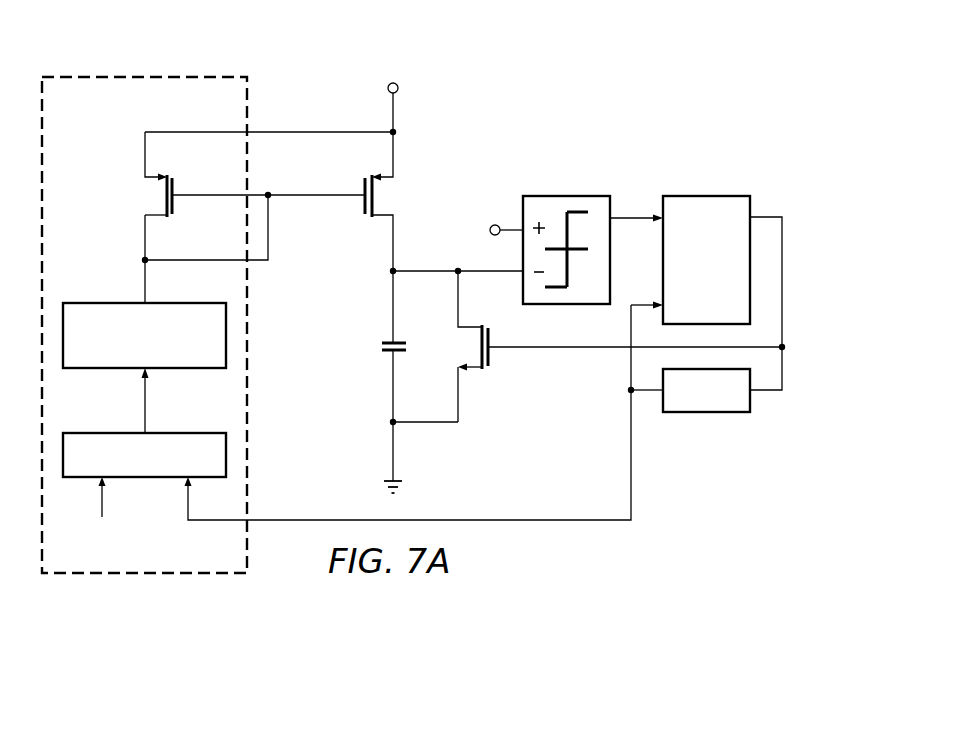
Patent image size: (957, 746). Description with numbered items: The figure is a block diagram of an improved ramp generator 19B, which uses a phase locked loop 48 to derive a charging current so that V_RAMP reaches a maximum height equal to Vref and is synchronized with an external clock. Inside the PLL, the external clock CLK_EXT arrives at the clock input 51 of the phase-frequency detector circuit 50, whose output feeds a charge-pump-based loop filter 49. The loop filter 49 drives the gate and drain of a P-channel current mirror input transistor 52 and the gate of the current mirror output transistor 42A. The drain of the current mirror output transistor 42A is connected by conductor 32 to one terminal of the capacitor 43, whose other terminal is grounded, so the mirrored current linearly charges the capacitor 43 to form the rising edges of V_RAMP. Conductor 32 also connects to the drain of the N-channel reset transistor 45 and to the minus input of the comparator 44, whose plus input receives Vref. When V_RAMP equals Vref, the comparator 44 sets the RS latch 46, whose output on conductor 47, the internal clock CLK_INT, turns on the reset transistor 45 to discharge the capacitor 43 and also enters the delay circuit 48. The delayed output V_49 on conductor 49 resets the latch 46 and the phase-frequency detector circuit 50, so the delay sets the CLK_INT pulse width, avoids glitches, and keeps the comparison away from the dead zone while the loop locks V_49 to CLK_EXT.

The ramp generator 19B is at (658, 90).
The delay circuit 48 is at (119, 75).
The current mirror input transistor 52 is at (178, 186).
The current mirror output transistor 42A is at (362, 184).
The conductor 32 is at (392, 249).
The capacitor 43 is at (381, 345).
The reset transistor 45 is at (489, 357).
The comparator 44 is at (577, 196).
The RS latch 46 is at (706, 196).
The conductor 47 is at (782, 260).
The charge-pump-based loop filter 49 is at (105, 302).
The phase-frequency detector circuit 50 is at (105, 432).
The clock input 51 is at (102, 505).